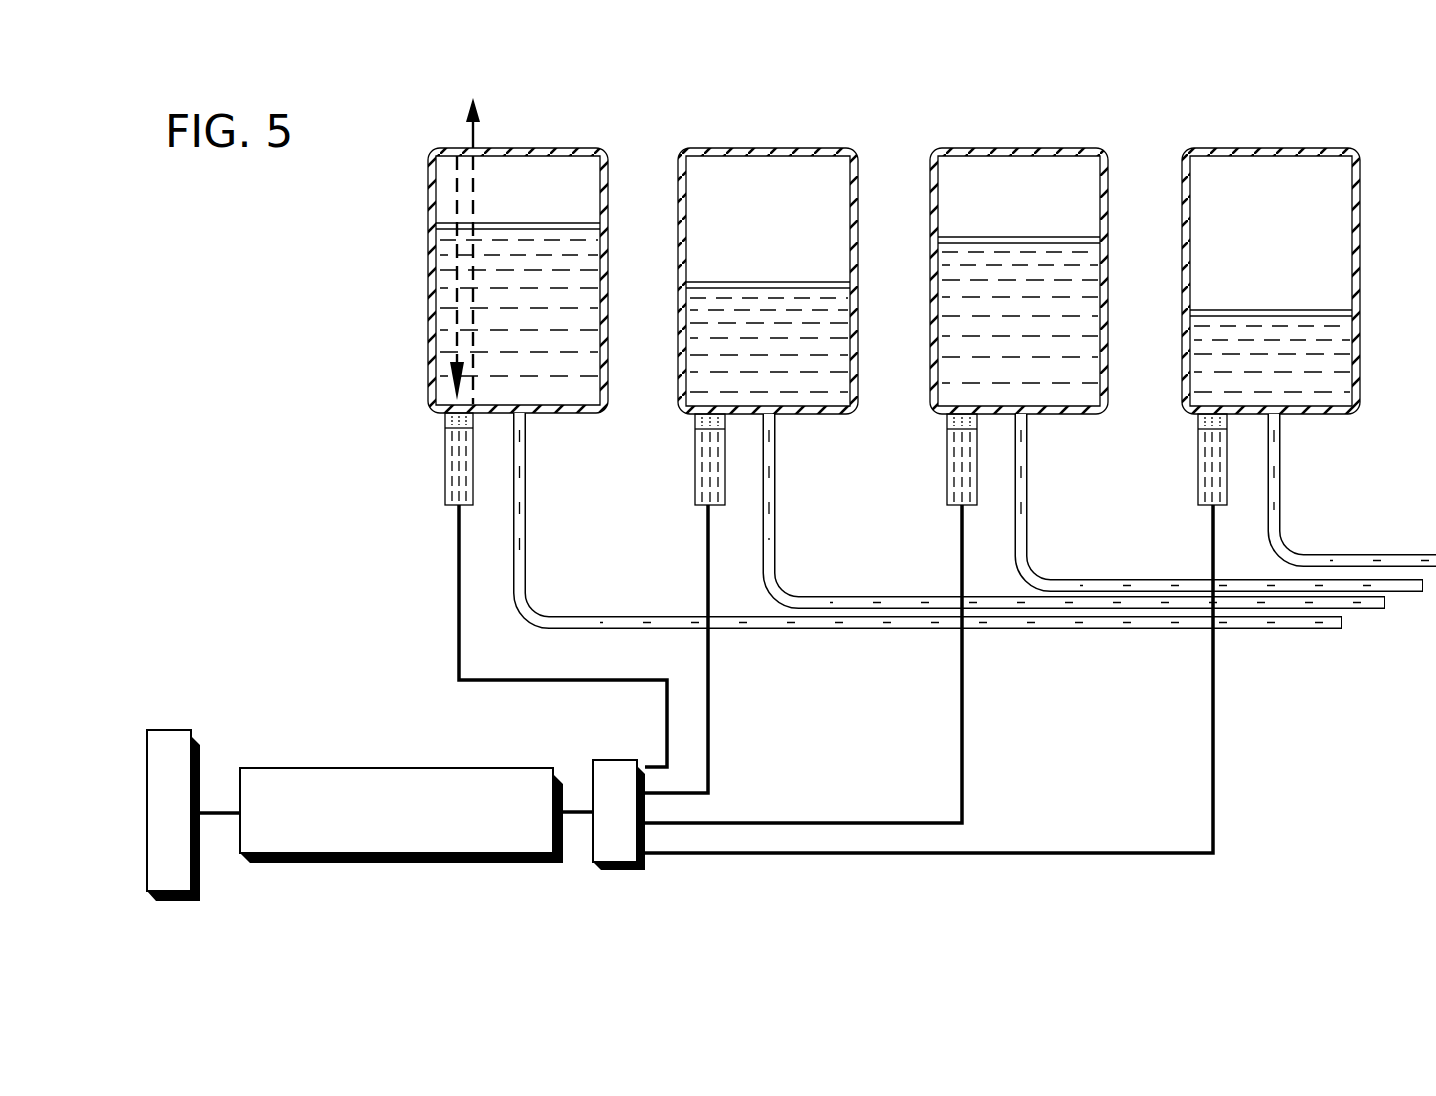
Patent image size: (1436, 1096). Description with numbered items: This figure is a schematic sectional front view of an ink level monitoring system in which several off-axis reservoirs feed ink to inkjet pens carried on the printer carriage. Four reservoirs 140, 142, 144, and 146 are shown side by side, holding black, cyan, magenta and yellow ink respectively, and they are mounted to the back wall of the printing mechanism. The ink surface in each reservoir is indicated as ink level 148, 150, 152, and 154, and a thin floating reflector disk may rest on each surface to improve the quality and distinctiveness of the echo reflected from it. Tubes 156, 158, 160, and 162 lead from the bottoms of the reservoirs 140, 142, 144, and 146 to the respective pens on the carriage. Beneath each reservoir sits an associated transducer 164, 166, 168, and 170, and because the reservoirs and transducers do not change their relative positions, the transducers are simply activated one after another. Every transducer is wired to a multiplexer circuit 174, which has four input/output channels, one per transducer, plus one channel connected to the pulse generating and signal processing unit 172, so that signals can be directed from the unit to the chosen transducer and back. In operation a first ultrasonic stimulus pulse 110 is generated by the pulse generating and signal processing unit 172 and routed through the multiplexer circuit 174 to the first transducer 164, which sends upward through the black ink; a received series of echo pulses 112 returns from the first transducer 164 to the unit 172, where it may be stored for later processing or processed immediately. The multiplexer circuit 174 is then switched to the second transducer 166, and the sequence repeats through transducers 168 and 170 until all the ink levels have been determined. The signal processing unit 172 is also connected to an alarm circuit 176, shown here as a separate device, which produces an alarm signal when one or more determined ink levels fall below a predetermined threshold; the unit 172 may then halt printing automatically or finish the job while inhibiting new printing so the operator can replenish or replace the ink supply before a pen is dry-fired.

The first ultrasonic stimulus pulse 110 is at (462, 257).
The received series of echo pulses 112 is at (464, 302).
The reservoir 140 is at (580, 140).
The reservoir 142 is at (824, 140).
The reservoir 144 is at (1086, 140).
The reservoir 146 is at (1332, 140).
The ink level 148 is at (533, 215).
The ink level 150 is at (786, 275).
The ink level 152 is at (1020, 230).
The ink level 154 is at (1276, 303).
The tube 156 is at (520, 520).
The tube 158 is at (770, 516).
The tube 160 is at (1022, 518).
The tube 162 is at (1275, 503).
The transducer 164 is at (446, 460).
The transducer 166 is at (696, 460).
The transducer 168 is at (948, 457).
The transducer 170 is at (1199, 457).
The pulse generating and signal processing unit 172 is at (303, 766).
The multiplexer circuit 174 is at (604, 758).
The alarm circuit 176 is at (169, 729).